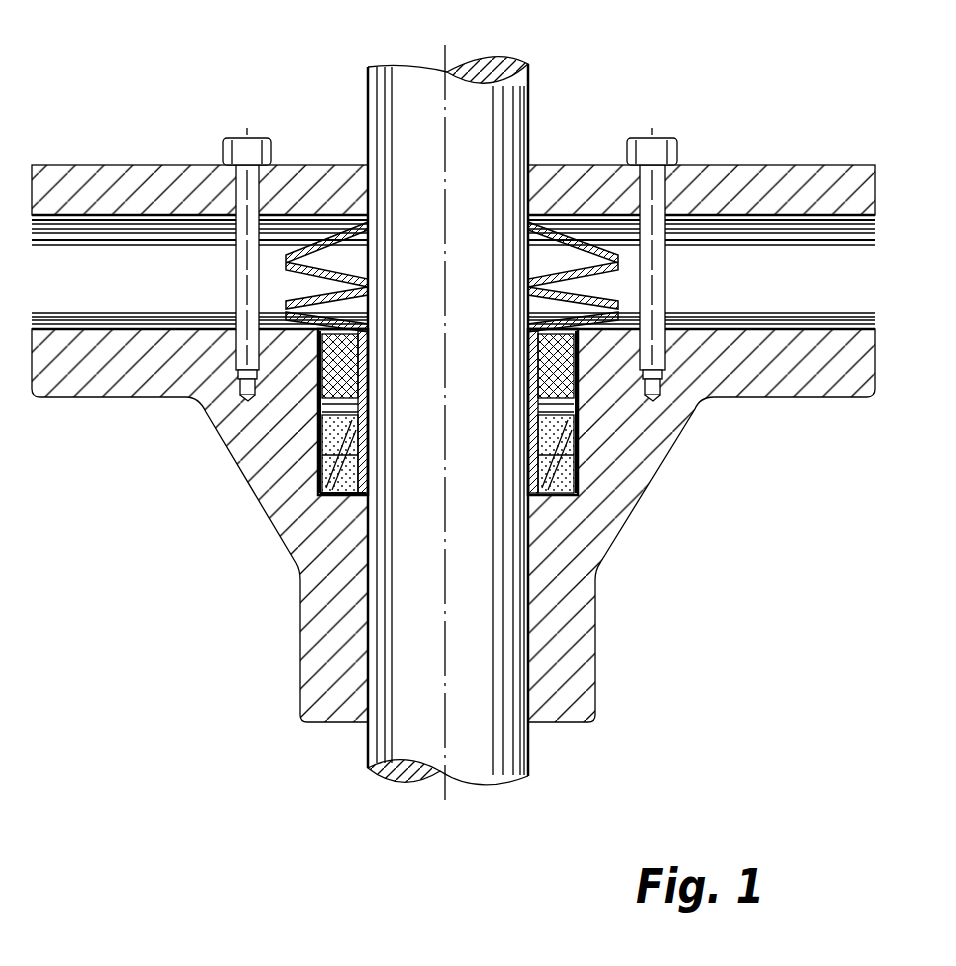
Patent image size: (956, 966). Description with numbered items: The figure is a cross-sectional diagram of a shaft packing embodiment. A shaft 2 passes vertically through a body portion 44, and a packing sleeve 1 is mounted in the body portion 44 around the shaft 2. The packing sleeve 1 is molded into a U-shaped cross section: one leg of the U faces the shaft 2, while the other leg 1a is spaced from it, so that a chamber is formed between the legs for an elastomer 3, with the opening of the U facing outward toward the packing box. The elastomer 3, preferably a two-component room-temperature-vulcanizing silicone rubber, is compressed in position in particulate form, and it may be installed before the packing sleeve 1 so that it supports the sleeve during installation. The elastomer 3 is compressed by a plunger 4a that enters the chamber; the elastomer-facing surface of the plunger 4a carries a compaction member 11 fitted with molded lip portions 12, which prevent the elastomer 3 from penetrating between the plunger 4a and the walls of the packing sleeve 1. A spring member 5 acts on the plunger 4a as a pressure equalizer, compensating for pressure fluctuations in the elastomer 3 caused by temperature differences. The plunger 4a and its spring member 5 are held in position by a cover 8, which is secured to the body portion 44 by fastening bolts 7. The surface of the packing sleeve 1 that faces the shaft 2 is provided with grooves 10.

The packing sleeve 1 is at (368, 500).
The leg of the U-shaped packing sleeve 1a is at (318, 455).
The shaft 2 is at (502, 118).
The elastomer 3 is at (320, 490).
The plunger 4a is at (583, 372).
The spring member 5 is at (585, 216).
The fastening bolts 7 is at (234, 138).
The cover 8 is at (780, 184).
The grooves 10 is at (368, 425).
The compaction member 11 is at (583, 422).
The molded lip portions 12 is at (583, 470).
The body portion 44 is at (585, 640).